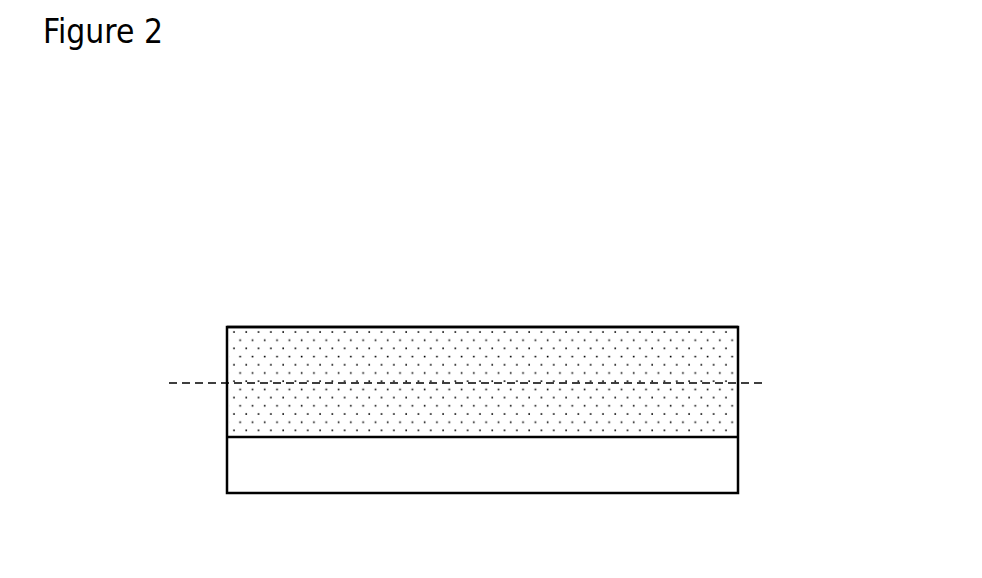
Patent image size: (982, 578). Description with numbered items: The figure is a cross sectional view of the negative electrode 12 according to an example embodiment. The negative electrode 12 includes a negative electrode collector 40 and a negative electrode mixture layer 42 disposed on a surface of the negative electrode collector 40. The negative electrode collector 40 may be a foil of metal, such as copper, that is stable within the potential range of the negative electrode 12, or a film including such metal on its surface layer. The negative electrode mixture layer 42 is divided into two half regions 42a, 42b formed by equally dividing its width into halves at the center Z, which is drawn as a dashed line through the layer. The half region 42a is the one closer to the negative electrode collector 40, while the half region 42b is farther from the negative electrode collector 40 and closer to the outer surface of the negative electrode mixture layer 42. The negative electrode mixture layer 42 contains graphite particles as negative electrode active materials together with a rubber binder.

The negative electrode 12 is at (762, 240).
The negative electrode collector 40 is at (227, 462).
The negative electrode mixture layer 42 is at (862, 295).
The half region 42a is at (738, 417).
The half region 42b is at (738, 355).
The center Z is at (205, 382).